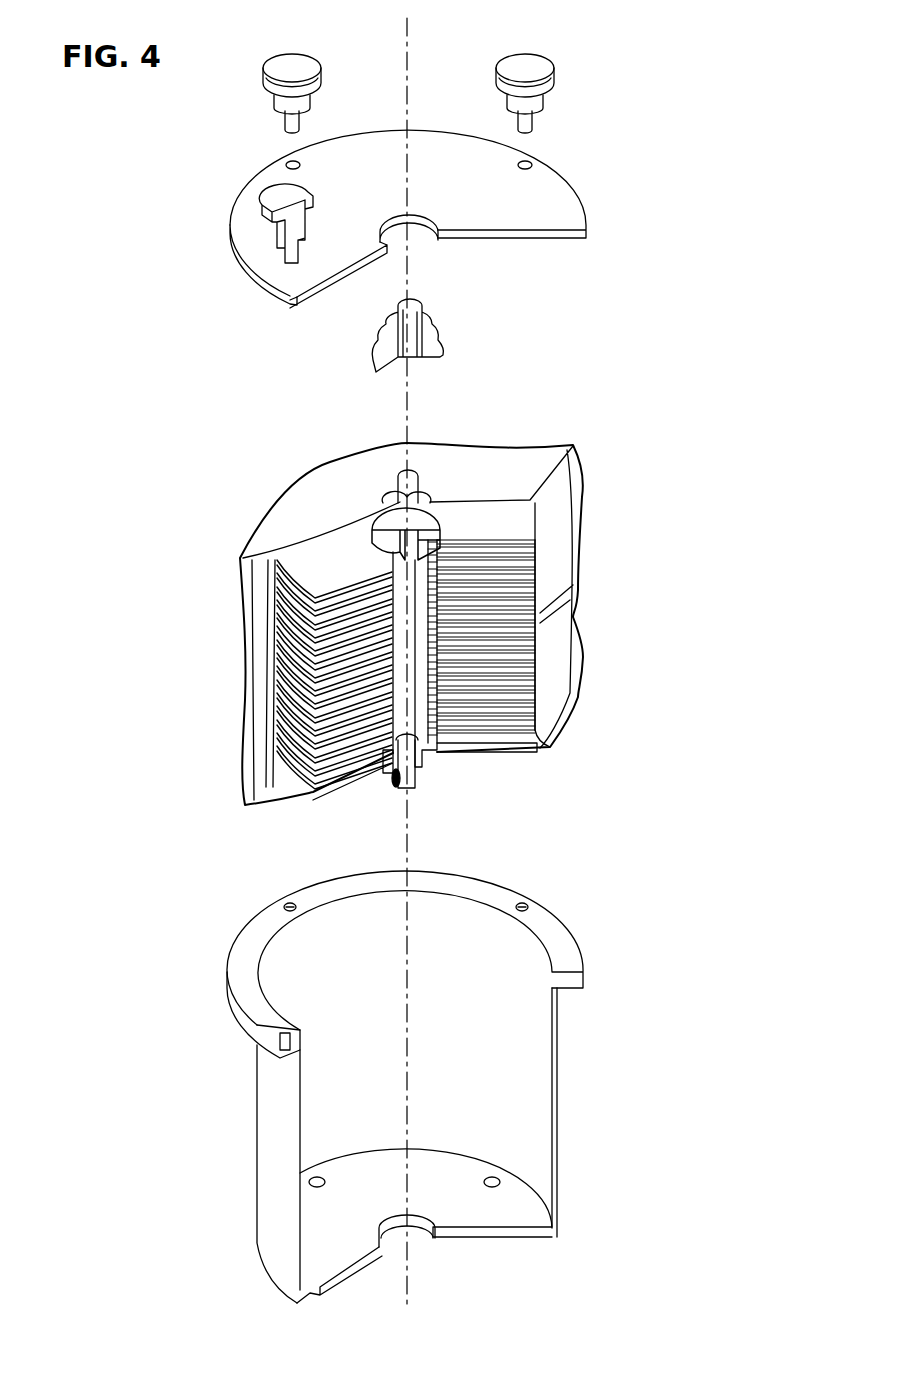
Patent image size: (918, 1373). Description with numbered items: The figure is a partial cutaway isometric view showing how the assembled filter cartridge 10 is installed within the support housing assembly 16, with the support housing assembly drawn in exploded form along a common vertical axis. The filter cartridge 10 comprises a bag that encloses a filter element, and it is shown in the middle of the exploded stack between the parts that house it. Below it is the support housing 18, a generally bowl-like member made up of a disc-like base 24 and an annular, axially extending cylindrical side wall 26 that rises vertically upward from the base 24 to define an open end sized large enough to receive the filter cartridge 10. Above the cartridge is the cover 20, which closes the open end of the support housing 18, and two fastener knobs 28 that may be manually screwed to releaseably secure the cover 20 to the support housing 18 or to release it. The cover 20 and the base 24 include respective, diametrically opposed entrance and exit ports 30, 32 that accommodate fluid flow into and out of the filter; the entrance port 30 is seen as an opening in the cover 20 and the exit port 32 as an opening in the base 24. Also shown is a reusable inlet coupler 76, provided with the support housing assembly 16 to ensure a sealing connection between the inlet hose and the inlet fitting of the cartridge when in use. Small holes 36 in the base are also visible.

The filter cartridge 10 is at (601, 498).
The support housing assembly 16 is at (390, 1087).
The support housing 18 is at (568, 946).
The cover 20 is at (467, 160).
The base 24 is at (458, 1205).
The cylindrical side wall 26 is at (525, 67).
The fastener knobs 28 is at (292, 67).
The entrance port 30 is at (417, 233).
The exit port 32 is at (416, 1243).
The hole 36 is at (492, 1177).
The reusable inlet coupler 76 is at (425, 318).